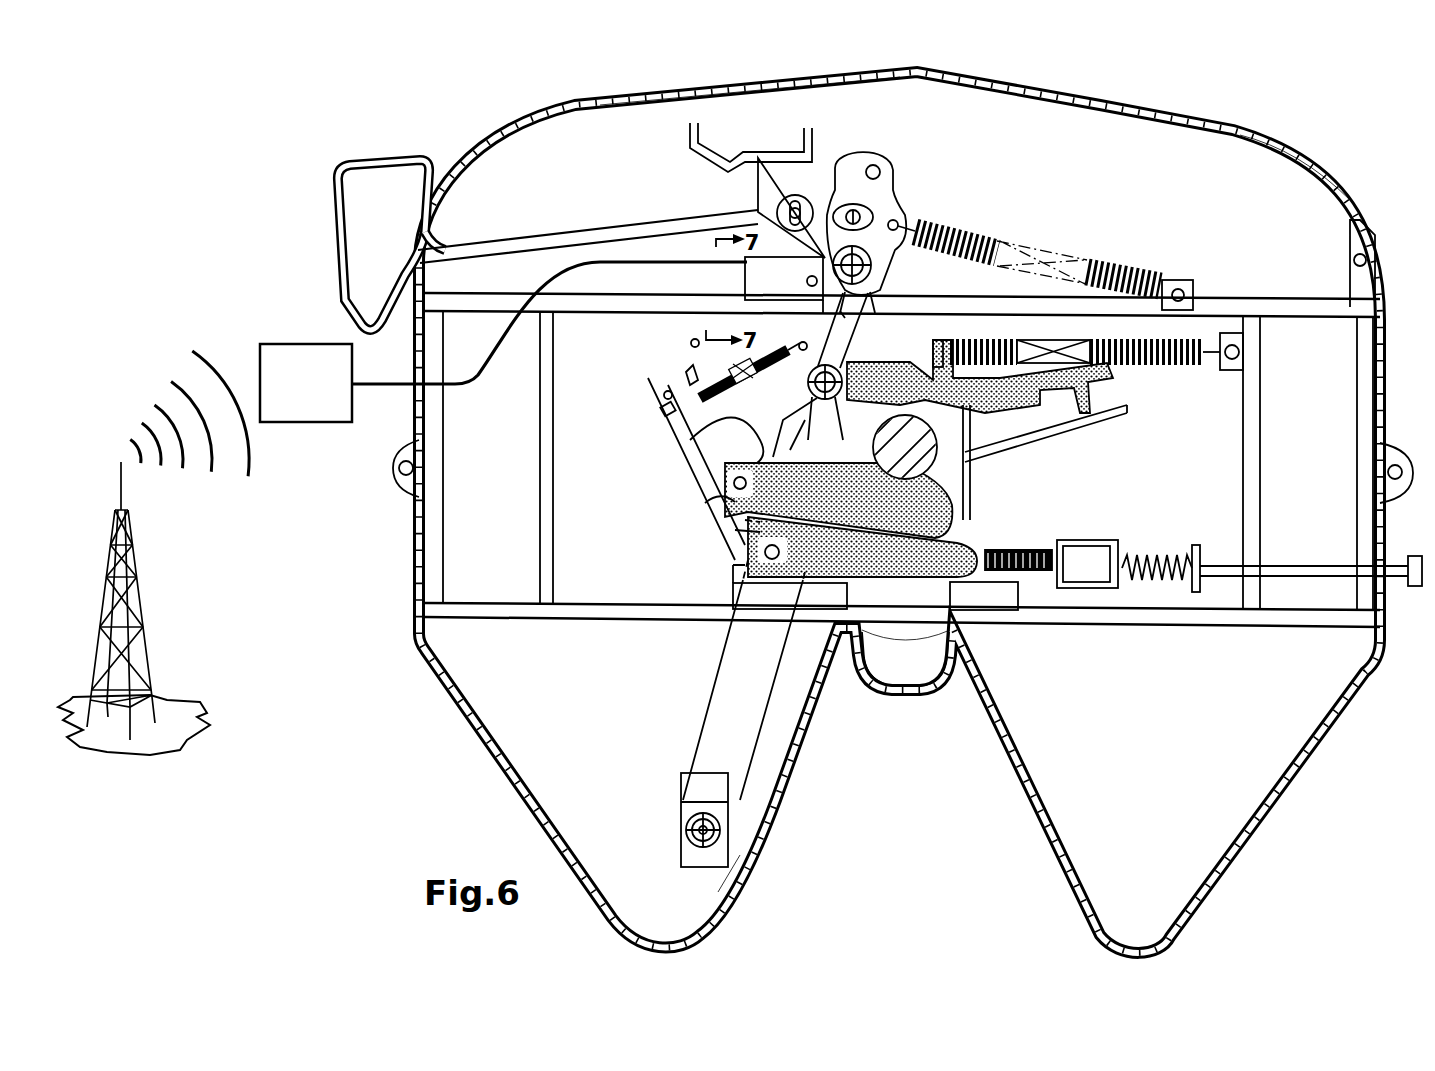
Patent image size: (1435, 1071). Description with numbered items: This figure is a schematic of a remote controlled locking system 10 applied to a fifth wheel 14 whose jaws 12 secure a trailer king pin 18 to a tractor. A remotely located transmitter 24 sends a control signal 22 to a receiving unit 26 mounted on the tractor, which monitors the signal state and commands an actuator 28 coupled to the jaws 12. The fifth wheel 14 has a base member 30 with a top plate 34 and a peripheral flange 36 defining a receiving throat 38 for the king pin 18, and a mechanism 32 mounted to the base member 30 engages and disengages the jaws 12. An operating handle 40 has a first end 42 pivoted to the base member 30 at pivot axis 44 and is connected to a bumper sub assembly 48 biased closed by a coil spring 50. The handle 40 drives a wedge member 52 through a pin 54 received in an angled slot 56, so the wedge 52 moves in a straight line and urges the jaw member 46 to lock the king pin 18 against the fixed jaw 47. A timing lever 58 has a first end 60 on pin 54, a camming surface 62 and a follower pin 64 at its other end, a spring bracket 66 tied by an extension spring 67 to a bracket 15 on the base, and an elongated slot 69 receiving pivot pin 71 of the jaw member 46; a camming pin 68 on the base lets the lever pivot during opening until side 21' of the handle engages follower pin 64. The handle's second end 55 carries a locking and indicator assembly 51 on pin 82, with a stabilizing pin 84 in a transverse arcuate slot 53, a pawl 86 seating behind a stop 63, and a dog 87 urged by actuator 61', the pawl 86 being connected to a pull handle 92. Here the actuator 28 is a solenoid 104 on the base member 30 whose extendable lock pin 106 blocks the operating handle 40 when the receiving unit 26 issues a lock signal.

The remote controlled locking system 10 is at (695, 69).
The jaws 12 is at (985, 502).
The fifth wheel 14 is at (1132, 90).
The bracket 15 is at (814, 375).
The king pin 18 is at (922, 476).
The side of the operating handle 21' is at (753, 430).
The control signal 22 is at (148, 377).
The transmitter 24 is at (140, 643).
The receiving unit 26 is at (292, 345).
The actuator 28 is at (735, 256).
The base member 30 is at (643, 100).
The mechanism 32 is at (907, 142).
The top plate 34 is at (1175, 140).
The peripheral flange 36 is at (730, 878).
The receiving throat 38 is at (920, 642).
The operating handle 40 is at (745, 715).
The first end 42 is at (738, 818).
The pivot axis 44 is at (683, 840).
The jaw member 46 is at (962, 528).
The fixed jaw 47 is at (1002, 430).
The bumper sub assembly 48 is at (1125, 385).
The coil spring 50 is at (1203, 333).
The locking and indicator assembly 51 is at (853, 162).
The wedge member 52 is at (970, 614).
The transverse arcuate slot 53 is at (905, 200).
The pin 54 is at (745, 548).
The second end 55 is at (899, 224).
The slot 56 is at (735, 520).
The timing lever 58 is at (690, 440).
The first end 60 is at (735, 530).
The actuator 61' is at (1055, 268).
The camming surface 62 is at (684, 373).
The stop 63 is at (733, 155).
The follower pin 64 is at (664, 394).
The spring bracket 66 is at (665, 412).
The extension spring 67 is at (705, 375).
The camming pin 68 is at (690, 342).
The elongated slot 69 is at (738, 482).
The pivot pin 71 is at (705, 503).
The pin 82 is at (874, 262).
The stabilizing pin 84 is at (845, 207).
The pawl 86 is at (758, 183).
The dog 87 is at (873, 215).
The pull handle 92 is at (372, 158).
The solenoid 104 is at (757, 272).
The lock pin 106 is at (868, 288).